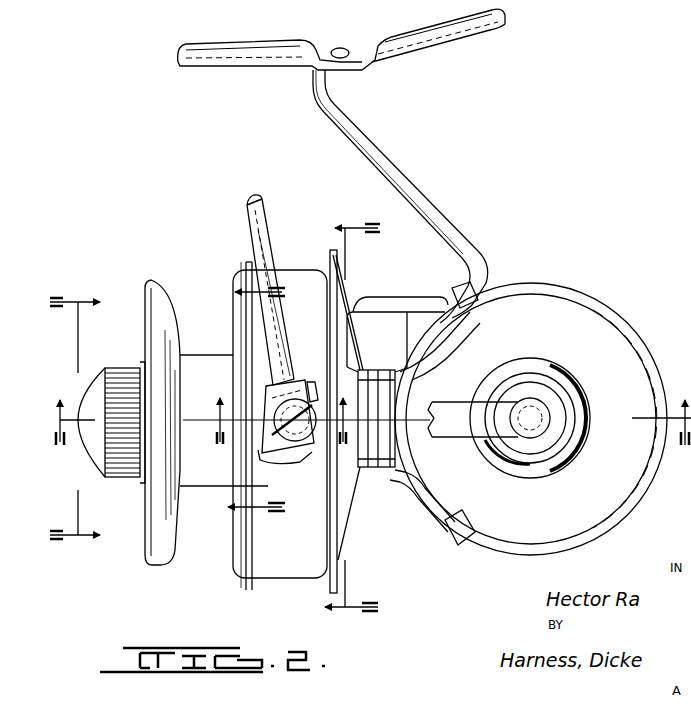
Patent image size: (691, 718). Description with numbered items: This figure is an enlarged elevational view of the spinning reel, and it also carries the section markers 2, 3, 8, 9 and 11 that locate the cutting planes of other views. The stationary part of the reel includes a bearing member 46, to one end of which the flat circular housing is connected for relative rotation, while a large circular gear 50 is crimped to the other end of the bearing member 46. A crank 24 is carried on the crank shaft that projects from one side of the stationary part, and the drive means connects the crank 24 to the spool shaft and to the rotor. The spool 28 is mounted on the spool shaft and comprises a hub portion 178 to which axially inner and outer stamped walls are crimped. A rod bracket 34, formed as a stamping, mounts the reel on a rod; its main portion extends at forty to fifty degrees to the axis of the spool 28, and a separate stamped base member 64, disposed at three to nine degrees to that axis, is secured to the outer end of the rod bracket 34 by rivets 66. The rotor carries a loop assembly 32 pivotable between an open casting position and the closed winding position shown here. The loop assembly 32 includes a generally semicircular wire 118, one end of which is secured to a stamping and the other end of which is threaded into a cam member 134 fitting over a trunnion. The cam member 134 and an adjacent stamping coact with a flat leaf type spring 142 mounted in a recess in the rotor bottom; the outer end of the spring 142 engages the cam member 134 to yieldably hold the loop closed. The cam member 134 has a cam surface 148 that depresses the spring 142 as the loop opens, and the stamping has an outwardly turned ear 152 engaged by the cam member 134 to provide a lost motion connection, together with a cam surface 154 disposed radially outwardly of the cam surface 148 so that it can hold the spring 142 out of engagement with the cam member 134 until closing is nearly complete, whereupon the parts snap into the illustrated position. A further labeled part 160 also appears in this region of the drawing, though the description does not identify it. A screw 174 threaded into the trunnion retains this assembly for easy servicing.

The section line 2- 2 is at (75, 423).
The section line 3- 3 is at (367, 409).
The section line 8- 8 is at (237, 402).
The section line 9- 9 is at (335, 420).
The section line 11- 11 is at (301, 421).
The crank 24 is at (447, 398).
The spool 28 is at (160, 278).
The loop assembly 32 is at (246, 203).
The rod bracket 34 is at (408, 184).
The bearing member 46 is at (372, 408).
The large circular gear 50 is at (268, 582).
The base member 64 is at (445, 46).
The rivets 66 is at (345, 72).
The semicircular wire 118 is at (268, 220).
The cam member 134 is at (292, 366).
The flat leaf type spring 142 is at (240, 456).
The cam surface 148 is at (340, 470).
The outwardly turned ear 152 is at (270, 458).
The cam surface 154 is at (345, 492).
The bracket 160 is at (275, 437).
The screw 174 is at (262, 445).
The hub portion 178 is at (195, 355).